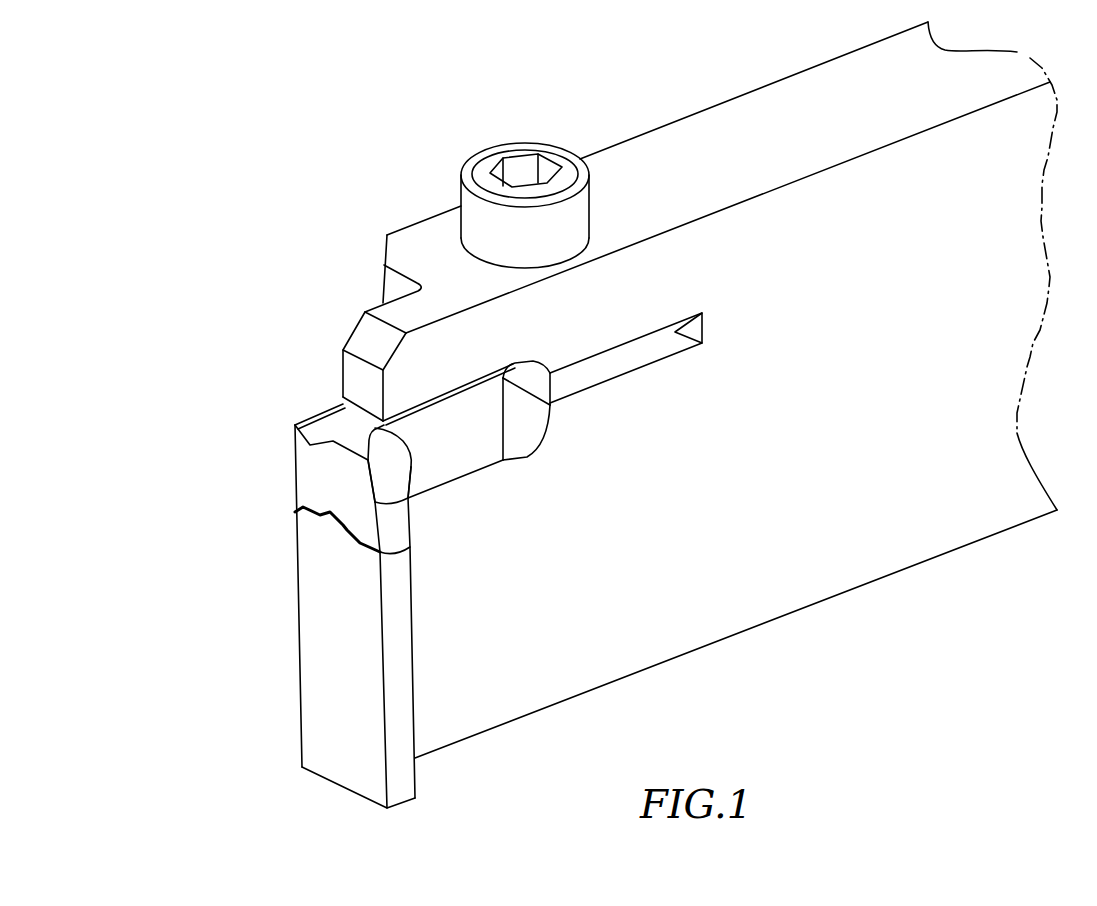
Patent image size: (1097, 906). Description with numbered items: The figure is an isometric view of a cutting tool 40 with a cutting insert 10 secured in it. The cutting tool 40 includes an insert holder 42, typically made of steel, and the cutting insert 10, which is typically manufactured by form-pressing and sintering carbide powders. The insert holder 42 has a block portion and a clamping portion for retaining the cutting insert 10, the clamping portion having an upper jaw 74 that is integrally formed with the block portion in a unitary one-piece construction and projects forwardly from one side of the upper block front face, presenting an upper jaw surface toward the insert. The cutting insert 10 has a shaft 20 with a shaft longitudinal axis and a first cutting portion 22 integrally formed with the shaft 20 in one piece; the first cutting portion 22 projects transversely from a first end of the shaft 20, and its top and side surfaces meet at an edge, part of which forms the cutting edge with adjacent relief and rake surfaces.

The cutting tool 40 is at (173, 183).
The insert holder 42 is at (450, 183).
The upper jaw 74 is at (335, 337).
The cutting insert 10 is at (354, 590).
The first cutting portion 22 is at (337, 487).
The shaft 20 is at (452, 437).